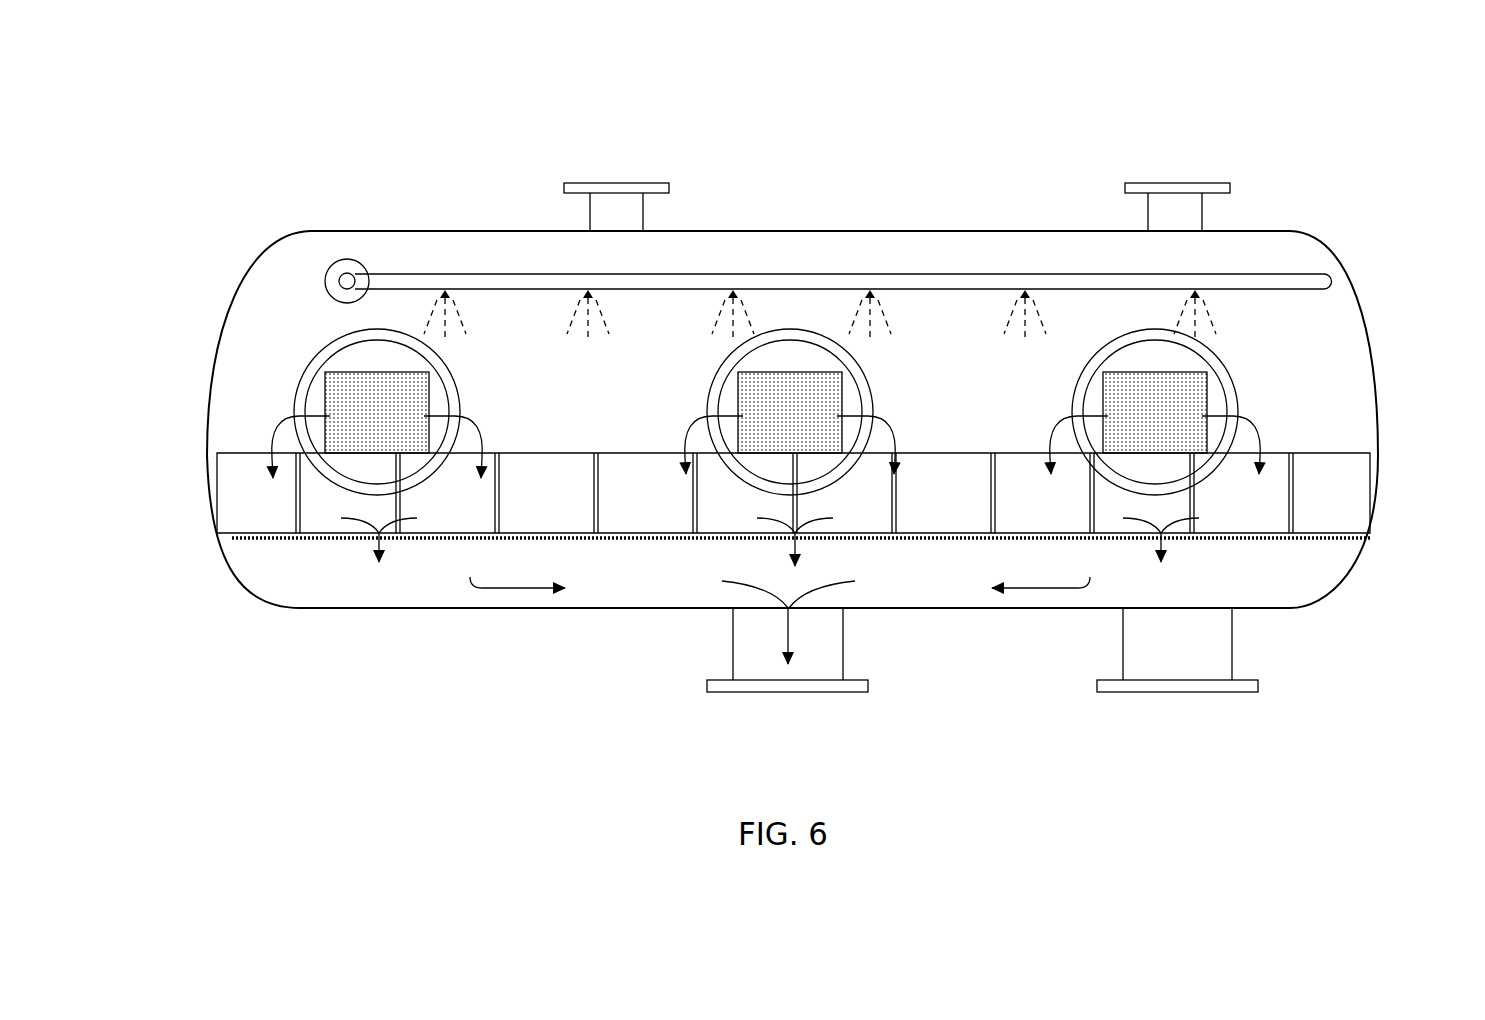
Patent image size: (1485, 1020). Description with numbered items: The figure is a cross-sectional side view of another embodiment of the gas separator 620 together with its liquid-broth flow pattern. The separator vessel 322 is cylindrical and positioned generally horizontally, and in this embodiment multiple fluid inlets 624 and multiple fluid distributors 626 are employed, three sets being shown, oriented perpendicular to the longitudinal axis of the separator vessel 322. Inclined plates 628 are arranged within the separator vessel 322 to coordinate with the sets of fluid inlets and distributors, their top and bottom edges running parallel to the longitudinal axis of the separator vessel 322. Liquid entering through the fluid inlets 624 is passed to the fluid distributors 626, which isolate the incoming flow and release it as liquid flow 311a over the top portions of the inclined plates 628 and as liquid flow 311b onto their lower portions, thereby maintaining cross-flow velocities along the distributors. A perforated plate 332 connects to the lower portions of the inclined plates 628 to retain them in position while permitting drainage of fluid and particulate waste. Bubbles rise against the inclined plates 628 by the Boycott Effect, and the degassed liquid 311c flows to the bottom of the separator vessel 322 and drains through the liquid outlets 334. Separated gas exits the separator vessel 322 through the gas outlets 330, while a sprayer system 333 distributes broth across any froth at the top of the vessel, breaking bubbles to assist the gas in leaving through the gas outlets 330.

The gas separator 620 is at (985, 122).
The separator vessel 322 is at (195, 420).
The sprayer system 333 is at (333, 265).
The gas outlet 330 is at (617, 180).
The fluid inlet 624 is at (310, 360).
The fluid distributor 626 is at (375, 395).
The liquid flow 311a is at (483, 420).
The liquid flow 311b is at (370, 553).
The liquid flow 311c is at (755, 598).
The inclined plates 628 is at (252, 497).
The perforated plate 332 is at (1321, 540).
The liquid outlet 334 is at (1170, 700).